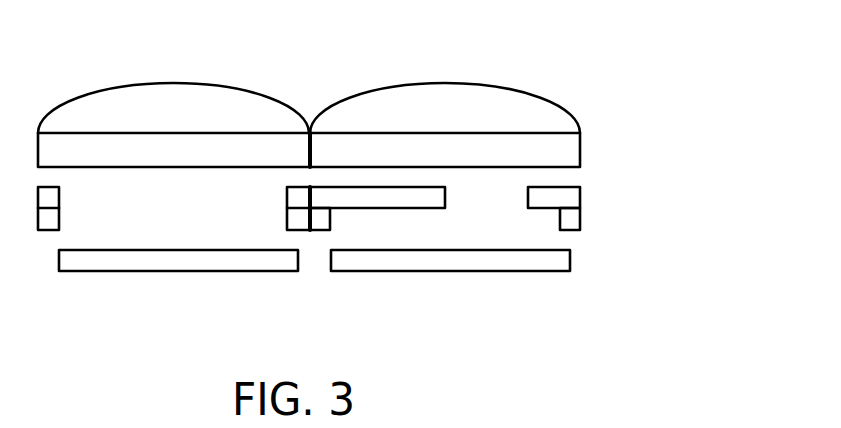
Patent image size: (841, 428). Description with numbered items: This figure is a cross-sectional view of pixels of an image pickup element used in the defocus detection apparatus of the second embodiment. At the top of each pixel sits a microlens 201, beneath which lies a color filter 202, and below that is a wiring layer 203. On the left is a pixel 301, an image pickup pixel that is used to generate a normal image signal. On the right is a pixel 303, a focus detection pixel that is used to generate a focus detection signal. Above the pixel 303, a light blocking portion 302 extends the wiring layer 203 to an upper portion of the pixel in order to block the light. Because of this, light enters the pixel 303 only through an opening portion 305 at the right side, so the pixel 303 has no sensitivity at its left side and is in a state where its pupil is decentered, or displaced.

The microlens 201 is at (527, 93).
The color filter 202 is at (580, 147).
The wiring layer 203 is at (580, 212).
The pixel (image pickup pixel) 301 is at (172, 271).
The light blocking portion 302 is at (377, 208).
The pixel (focus detection pixel) 303 is at (413, 271).
The opening portion 305 is at (482, 199).